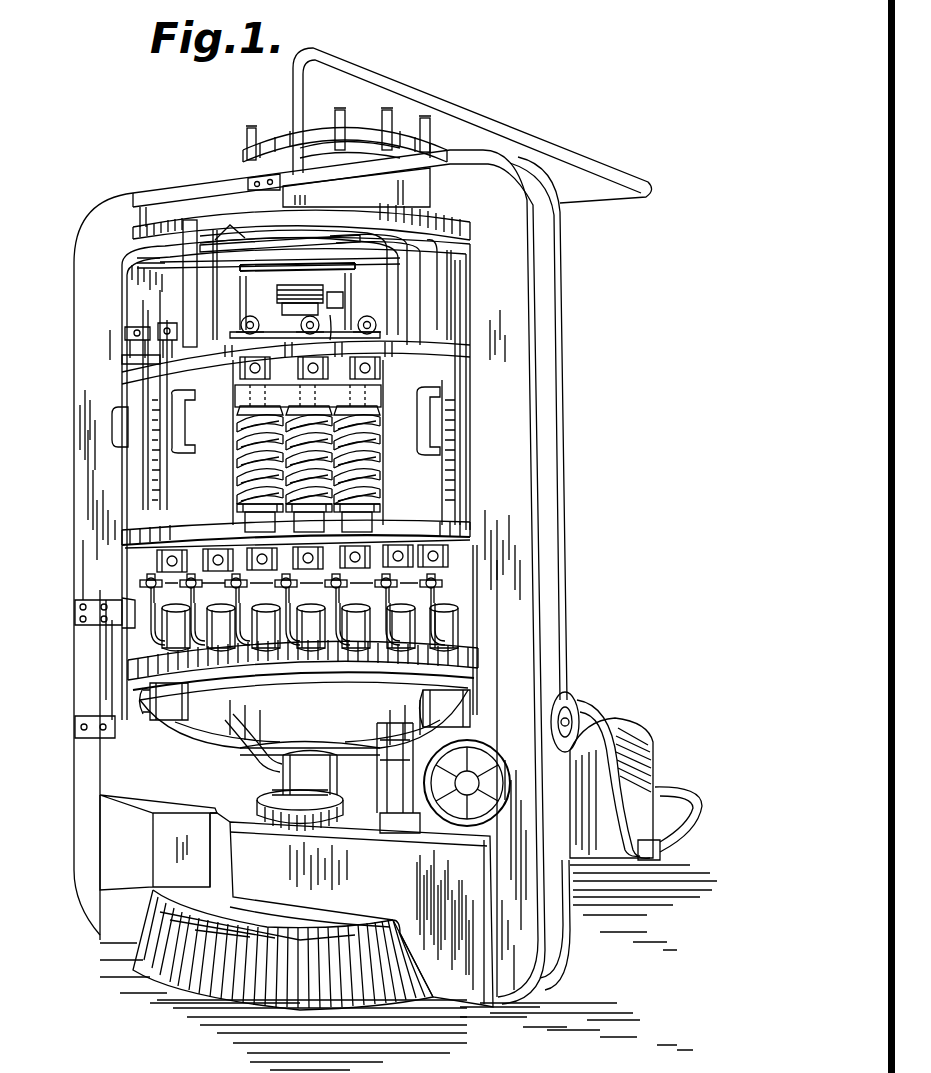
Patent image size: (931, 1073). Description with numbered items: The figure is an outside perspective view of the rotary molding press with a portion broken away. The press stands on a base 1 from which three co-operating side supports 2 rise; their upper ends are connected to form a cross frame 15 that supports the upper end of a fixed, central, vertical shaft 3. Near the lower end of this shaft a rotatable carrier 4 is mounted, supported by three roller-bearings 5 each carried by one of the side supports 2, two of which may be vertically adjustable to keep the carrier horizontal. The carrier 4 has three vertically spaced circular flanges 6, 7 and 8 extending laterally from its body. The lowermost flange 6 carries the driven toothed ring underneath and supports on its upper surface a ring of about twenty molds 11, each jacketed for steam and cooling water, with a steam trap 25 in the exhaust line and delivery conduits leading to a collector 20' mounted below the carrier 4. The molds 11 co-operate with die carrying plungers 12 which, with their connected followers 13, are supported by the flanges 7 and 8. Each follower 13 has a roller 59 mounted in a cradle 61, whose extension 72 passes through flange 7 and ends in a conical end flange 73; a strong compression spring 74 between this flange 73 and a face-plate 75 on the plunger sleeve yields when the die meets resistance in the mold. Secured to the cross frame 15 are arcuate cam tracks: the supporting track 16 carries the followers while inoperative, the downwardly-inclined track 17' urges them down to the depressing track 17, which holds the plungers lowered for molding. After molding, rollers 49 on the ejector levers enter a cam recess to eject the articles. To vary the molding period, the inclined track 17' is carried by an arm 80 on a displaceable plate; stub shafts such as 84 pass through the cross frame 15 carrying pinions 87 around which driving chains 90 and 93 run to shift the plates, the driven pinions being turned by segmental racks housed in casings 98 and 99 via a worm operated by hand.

The base 1 is at (190, 983).
The side supports 2 is at (80, 773).
The central vertical shaft 3 is at (307, 790).
The rotatable carrier 4 is at (253, 703).
The roller-bearings 5 is at (133, 696).
The lowermost flange 6 is at (133, 655).
The flange 7 is at (123, 533).
The flange 8 is at (242, 400).
The molds 11 is at (458, 610).
The die carrying plungers 12 is at (257, 550).
The followers 13 is at (137, 333).
The cross frame 15 is at (243, 240).
The supporting cam track 16 is at (405, 395).
The depressing cam track 17 is at (456, 300).
The downwardly-inclined cam track 17' is at (484, 316).
The collector 20' is at (238, 749).
The steam trap 25 is at (187, 578).
The roller 49 is at (588, 634).
The roller 59 is at (240, 270).
The cradle 61 is at (127, 362).
The extension 72 is at (353, 380).
The conical end flange 73 is at (243, 422).
The compression spring 74 is at (238, 462).
The face-plate 75 is at (376, 502).
The arm 80 is at (440, 238).
The stub shaft 84 is at (187, 262).
The pinions 87 is at (240, 240).
The driving chain 90 is at (140, 252).
The driving chain 93 is at (213, 220).
The casing 98 is at (398, 123).
The casing 99 is at (273, 133).